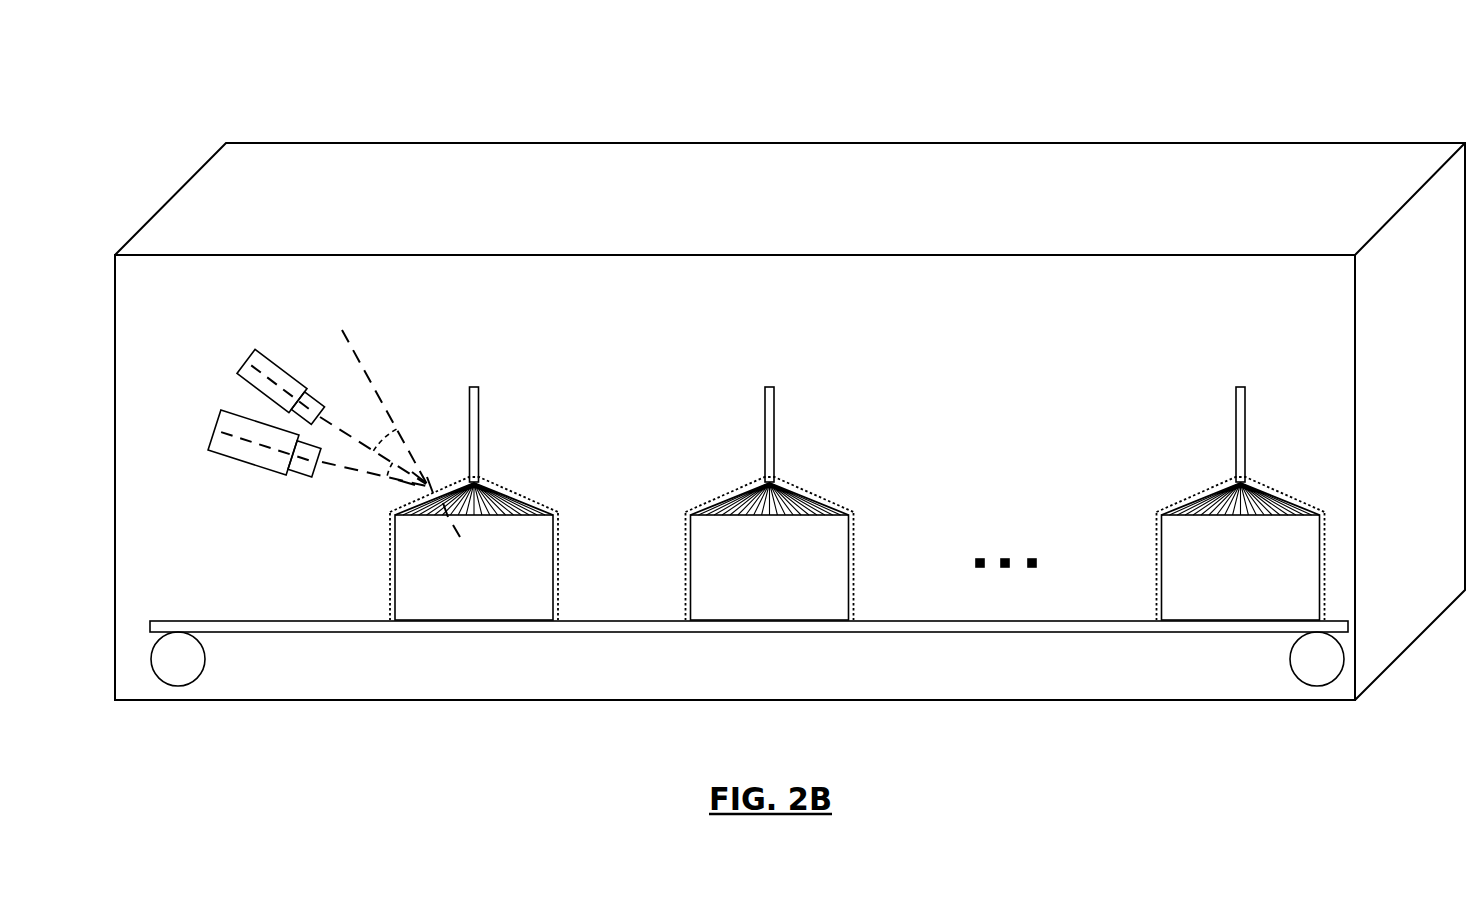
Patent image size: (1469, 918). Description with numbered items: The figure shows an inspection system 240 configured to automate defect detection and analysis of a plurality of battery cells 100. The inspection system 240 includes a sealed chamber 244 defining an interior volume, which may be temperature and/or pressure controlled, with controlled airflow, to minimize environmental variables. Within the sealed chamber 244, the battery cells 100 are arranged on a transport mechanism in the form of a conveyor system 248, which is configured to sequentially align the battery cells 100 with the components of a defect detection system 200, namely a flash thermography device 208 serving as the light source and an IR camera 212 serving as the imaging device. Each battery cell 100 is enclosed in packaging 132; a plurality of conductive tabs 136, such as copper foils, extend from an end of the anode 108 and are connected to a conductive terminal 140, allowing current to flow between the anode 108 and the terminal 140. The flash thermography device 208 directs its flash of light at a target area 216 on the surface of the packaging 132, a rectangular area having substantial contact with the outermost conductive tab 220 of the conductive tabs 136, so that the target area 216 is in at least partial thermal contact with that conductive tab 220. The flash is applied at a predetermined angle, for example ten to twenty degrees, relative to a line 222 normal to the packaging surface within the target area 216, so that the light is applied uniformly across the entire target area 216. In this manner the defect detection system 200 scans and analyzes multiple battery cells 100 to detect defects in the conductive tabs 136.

The inspection system 240 is at (172, 118).
The sealed chamber 244 is at (426, 143).
The conveyor system 248 is at (251, 672).
The defect detection system 200 is at (262, 526).
The flash thermography device 208 is at (253, 360).
The IR camera 212 is at (247, 463).
The target area 216 is at (398, 497).
The conductive tab 220 is at (445, 492).
The line 222 is at (375, 380).
The battery cell 100 is at (575, 558).
The anode 108 is at (392, 599).
The packaging 132 is at (390, 561).
The conductive tabs 136 is at (532, 507).
The conductive terminal 140 is at (480, 416).